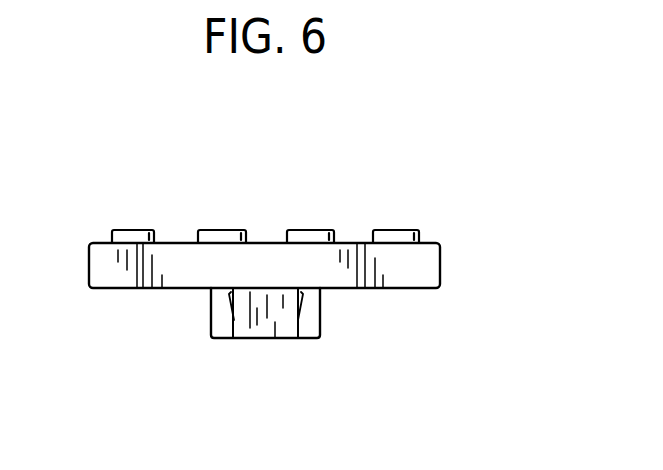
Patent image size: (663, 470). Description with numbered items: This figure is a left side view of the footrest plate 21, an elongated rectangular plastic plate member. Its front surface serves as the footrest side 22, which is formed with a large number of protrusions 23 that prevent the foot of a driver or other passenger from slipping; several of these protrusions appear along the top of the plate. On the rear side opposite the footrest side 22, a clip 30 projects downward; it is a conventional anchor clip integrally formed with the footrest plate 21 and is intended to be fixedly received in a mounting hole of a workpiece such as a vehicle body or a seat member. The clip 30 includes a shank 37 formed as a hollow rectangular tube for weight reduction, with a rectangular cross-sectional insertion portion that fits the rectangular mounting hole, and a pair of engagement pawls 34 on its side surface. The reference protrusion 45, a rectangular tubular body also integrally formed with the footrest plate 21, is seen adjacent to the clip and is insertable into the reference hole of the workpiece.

The footrest plate 21 is at (432, 202).
The footrest side 22 is at (263, 243).
The protrusions 23 is at (132, 238).
The clip 30 is at (289, 346).
The engagement pawls 34 is at (232, 303).
The shank 37 is at (248, 340).
The reference protrusion 45 is at (308, 316).